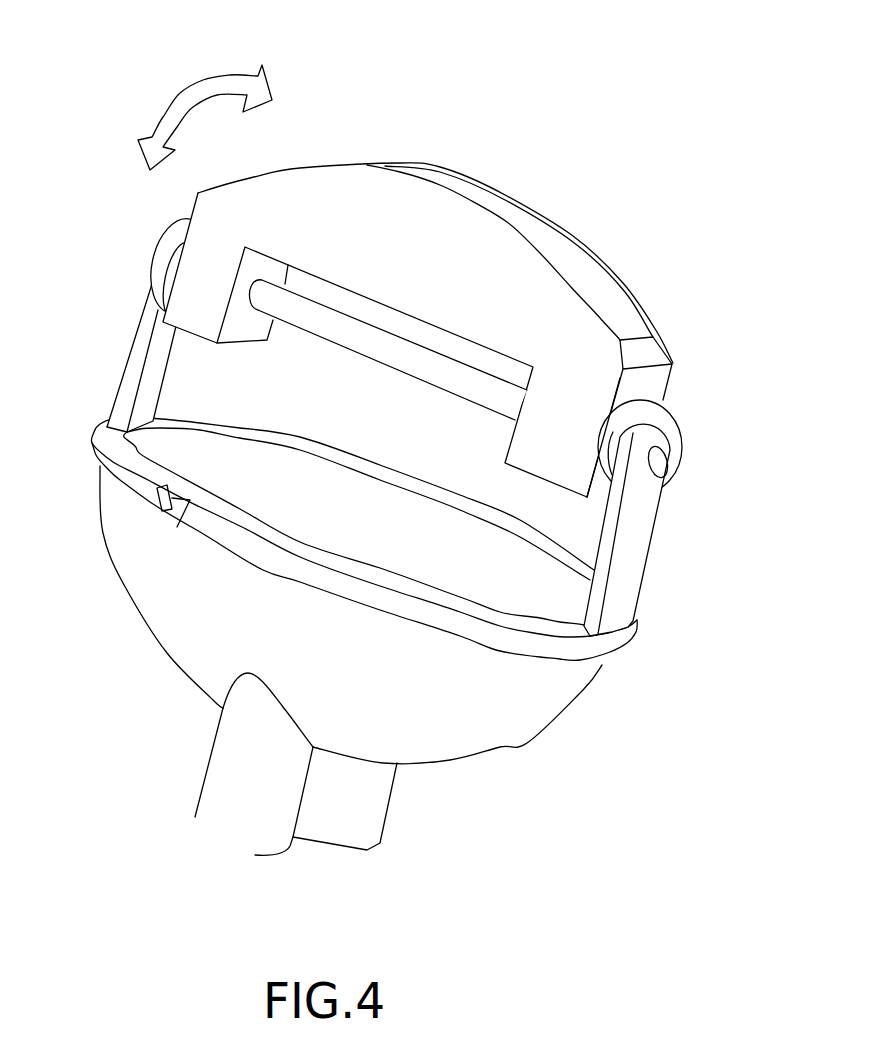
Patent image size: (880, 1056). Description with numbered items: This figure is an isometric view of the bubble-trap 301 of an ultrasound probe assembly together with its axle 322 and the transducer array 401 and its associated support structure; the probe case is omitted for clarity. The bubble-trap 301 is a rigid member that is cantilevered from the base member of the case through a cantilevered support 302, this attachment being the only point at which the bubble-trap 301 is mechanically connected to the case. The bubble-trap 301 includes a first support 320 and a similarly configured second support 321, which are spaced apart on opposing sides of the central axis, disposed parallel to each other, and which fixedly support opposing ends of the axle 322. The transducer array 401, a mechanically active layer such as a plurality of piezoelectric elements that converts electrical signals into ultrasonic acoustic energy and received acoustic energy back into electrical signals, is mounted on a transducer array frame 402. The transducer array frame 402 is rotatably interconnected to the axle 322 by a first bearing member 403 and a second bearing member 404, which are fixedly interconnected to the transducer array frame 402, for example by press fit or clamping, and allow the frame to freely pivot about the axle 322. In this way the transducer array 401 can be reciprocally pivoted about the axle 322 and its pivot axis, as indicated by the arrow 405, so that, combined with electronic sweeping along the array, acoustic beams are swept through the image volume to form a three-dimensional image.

The bubble-trap 301 is at (527, 743).
The cantilevered support 302 is at (385, 813).
The first support 320 is at (646, 567).
The second support 321 is at (130, 343).
The axle 322 is at (358, 357).
The transducer array 401 is at (628, 288).
The transducer array frame 402 is at (675, 380).
The first bearing member 403 is at (675, 420).
The second bearing member 404 is at (165, 255).
The arrow 405 is at (180, 93).